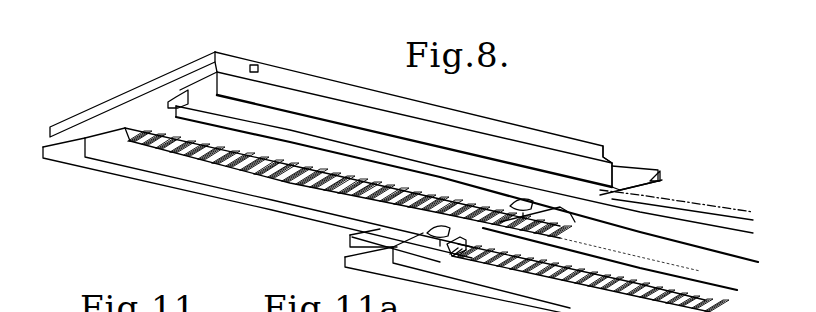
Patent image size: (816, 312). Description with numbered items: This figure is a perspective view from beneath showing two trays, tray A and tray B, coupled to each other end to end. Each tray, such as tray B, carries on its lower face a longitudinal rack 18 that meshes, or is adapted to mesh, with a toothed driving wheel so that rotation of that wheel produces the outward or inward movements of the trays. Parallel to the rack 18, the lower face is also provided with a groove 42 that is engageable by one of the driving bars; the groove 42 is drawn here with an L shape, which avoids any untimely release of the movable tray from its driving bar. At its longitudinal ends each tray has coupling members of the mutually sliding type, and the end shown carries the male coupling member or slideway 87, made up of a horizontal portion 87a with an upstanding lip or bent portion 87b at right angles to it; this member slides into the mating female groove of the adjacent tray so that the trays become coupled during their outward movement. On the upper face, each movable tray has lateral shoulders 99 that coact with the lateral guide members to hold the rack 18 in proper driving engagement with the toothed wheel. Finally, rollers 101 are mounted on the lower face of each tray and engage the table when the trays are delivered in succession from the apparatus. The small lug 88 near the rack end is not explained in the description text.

The longitudinal rack 18 is at (260, 170).
The groove 42 is at (182, 96).
The male coupling member 87 is at (620, 160).
The horizontal portion 87a is at (633, 168).
The upstanding lip 87b is at (661, 169).
The lug 88 is at (255, 68).
The lateral shoulders 99 is at (587, 150).
The rollers 101 is at (563, 222).
The tray A is at (705, 195).
The tray B is at (370, 78).